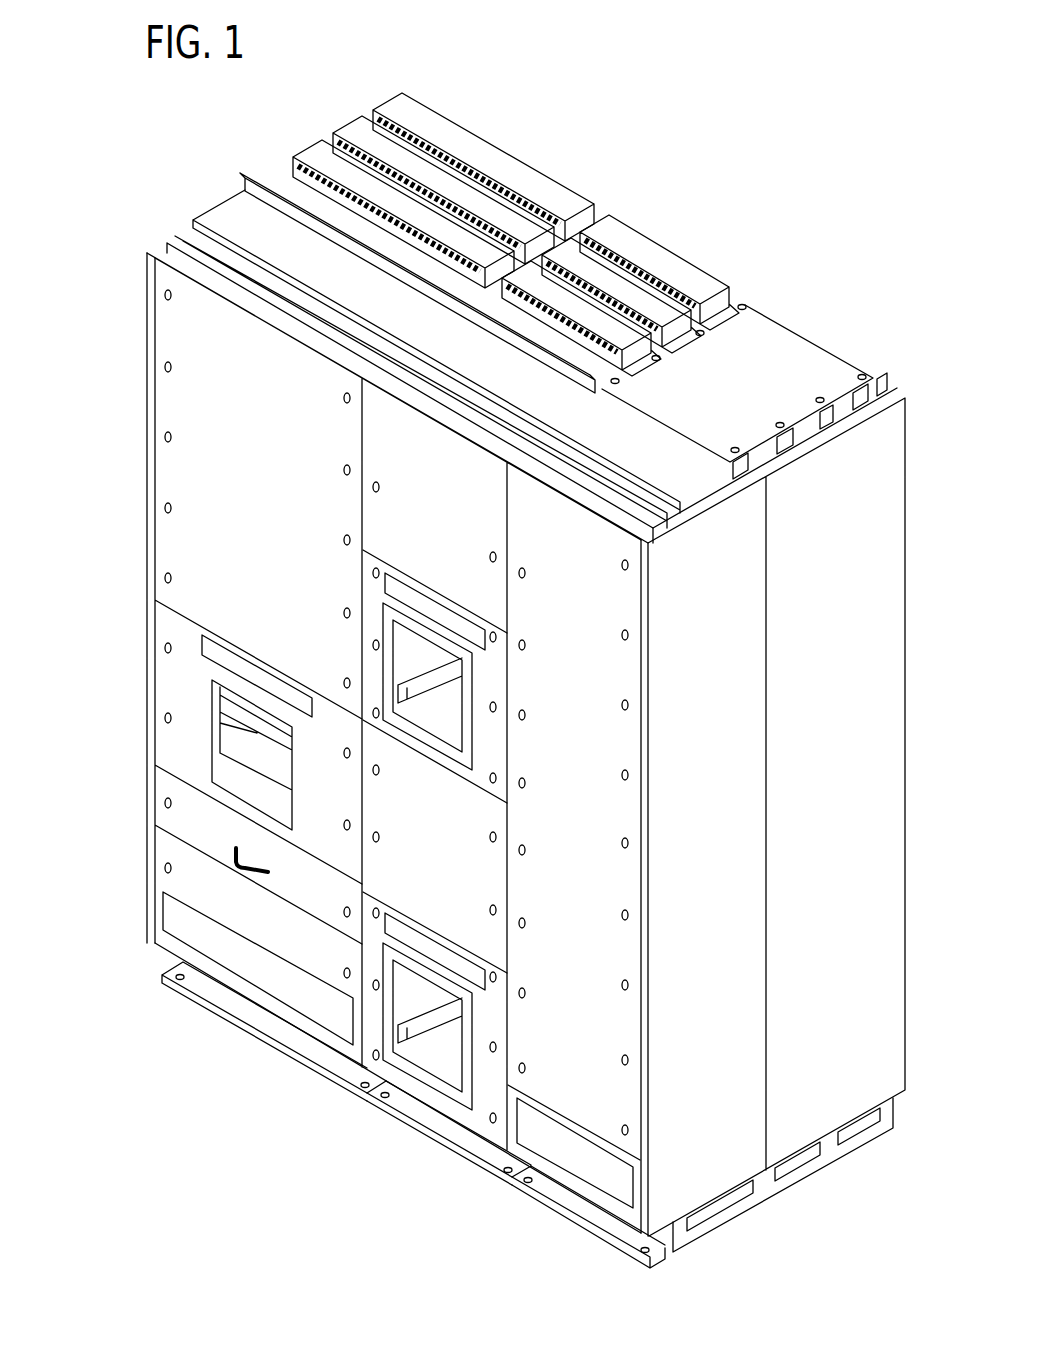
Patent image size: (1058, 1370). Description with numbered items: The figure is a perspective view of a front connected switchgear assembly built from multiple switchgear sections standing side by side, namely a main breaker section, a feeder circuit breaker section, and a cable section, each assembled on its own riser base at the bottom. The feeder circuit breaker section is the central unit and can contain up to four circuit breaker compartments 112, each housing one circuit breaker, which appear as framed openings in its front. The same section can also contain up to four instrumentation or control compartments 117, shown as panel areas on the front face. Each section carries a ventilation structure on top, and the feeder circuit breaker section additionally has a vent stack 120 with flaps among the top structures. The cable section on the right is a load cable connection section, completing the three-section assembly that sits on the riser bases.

The circuit breaker compartment 112 is at (442, 714).
The instrumentation or control compartment 117 is at (452, 862).
The vent stack 120 is at (652, 300).